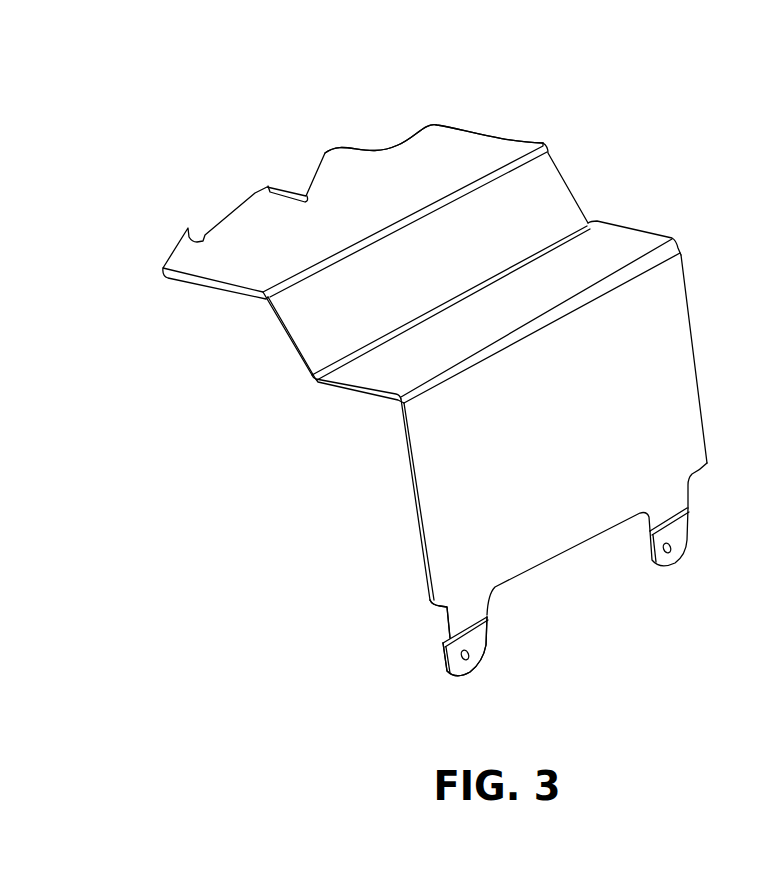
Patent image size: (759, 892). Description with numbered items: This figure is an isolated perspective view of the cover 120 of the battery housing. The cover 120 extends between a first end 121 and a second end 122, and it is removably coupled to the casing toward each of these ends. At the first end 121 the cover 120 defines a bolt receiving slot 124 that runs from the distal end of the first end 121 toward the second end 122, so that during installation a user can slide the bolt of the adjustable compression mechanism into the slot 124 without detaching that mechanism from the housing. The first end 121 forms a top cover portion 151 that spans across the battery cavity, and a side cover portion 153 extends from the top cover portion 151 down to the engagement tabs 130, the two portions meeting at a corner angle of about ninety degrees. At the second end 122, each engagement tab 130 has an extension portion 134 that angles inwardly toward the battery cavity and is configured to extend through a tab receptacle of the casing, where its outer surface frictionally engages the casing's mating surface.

The cover 120 is at (150, 200).
The first end 121 is at (413, 135).
The second end 122 is at (432, 665).
The bolt receiving slot 124 is at (283, 188).
The engagement tab 130 is at (655, 575).
The extension portion 134 is at (437, 643).
The top cover portion 151 is at (610, 180).
The side cover portion 153 is at (660, 340).